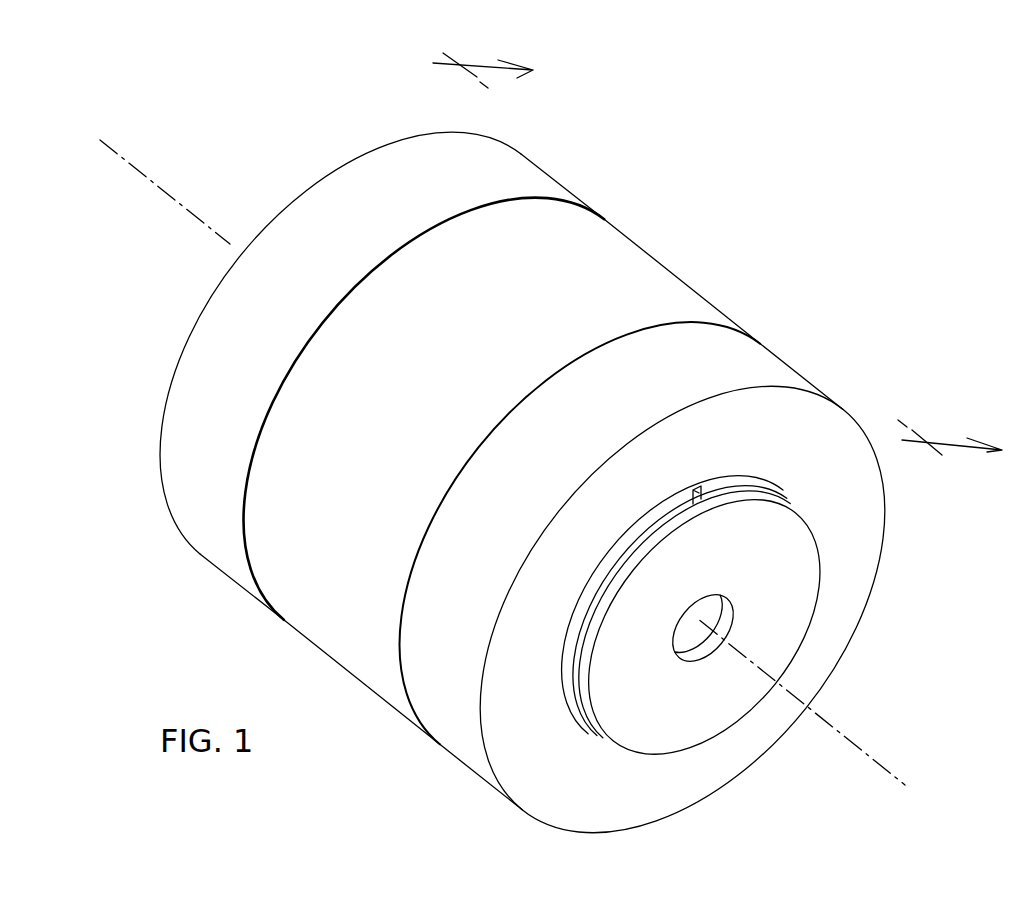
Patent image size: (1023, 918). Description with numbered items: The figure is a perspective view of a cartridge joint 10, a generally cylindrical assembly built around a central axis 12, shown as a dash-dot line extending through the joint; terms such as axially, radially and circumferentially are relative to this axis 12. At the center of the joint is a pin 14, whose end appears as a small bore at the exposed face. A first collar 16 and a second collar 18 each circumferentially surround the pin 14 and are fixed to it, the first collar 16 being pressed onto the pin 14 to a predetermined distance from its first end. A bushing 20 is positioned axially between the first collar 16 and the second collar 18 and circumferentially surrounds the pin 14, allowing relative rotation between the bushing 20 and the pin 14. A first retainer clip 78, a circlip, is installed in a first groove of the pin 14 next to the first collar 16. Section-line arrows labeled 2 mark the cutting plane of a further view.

The cartridge joint 10 is at (950, 170).
The central axis 12 is at (143, 172).
The pin 14 is at (763, 599).
The first collar 16 is at (755, 358).
The second collar 18 is at (522, 167).
The bushing 20 is at (623, 263).
The first retainer clip 78 is at (780, 492).
The section line 2 is at (712, 256).